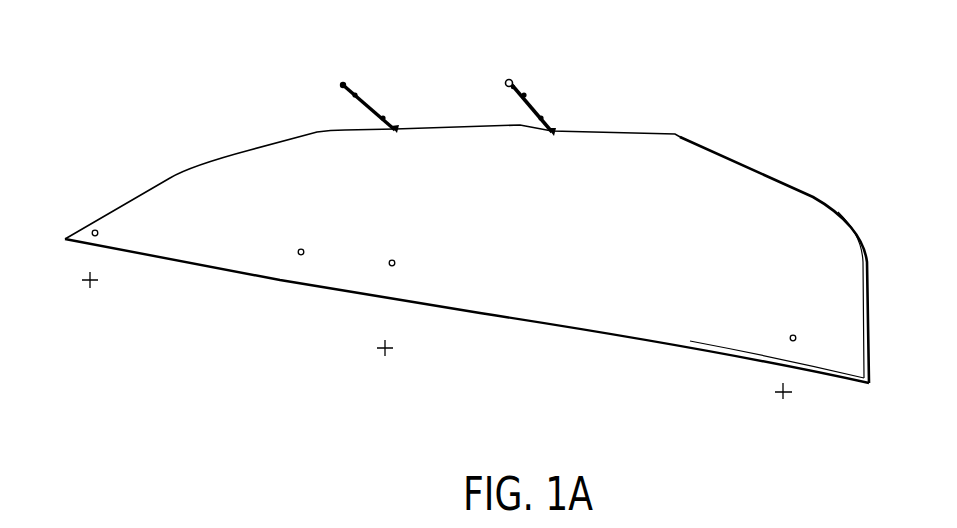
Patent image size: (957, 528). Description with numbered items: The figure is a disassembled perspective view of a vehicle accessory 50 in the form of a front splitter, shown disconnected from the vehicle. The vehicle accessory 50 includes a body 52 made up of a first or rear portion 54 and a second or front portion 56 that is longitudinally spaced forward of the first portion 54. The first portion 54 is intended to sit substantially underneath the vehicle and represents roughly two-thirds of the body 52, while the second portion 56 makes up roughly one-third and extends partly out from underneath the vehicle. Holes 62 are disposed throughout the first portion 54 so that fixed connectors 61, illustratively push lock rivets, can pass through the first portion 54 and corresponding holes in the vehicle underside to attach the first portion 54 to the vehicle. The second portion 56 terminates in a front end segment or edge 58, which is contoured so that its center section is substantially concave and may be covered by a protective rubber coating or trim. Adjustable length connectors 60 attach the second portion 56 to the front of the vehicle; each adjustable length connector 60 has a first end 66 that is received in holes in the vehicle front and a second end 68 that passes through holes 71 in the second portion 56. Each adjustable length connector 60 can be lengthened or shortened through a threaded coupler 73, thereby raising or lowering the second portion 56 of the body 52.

The vehicle accessory 50 is at (485, 231).
The body 52 is at (843, 270).
The first portion 54 is at (663, 322).
The second portion 56 is at (304, 174).
The end segment 58 is at (713, 142).
The adjustable length connector 60 is at (489, 70).
The fixed connector 61 is at (88, 288).
The holes 62 is at (90, 240).
The first end 66 is at (343, 85).
The second end 68 is at (556, 130).
The holes 71 is at (398, 130).
The threaded coupler 73 is at (362, 98).